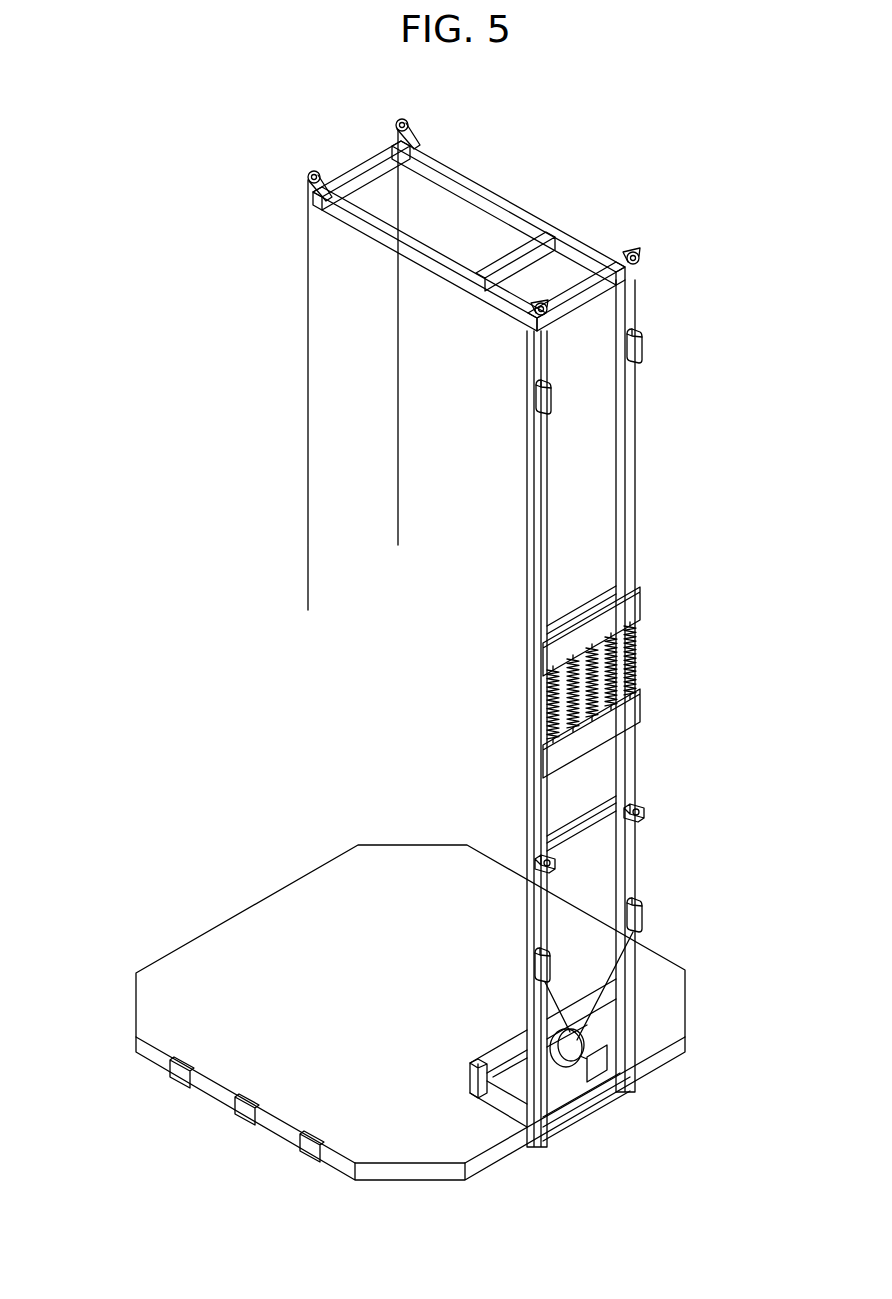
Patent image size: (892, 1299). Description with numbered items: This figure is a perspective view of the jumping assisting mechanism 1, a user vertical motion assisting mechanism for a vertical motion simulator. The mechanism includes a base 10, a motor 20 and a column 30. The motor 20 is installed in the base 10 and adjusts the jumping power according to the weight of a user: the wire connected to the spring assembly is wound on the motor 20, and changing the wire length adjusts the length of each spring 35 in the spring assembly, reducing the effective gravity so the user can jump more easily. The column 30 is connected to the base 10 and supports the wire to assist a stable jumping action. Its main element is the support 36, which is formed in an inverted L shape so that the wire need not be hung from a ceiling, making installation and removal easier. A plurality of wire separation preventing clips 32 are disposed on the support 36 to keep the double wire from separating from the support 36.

The jumping assisting mechanism 1 is at (252, 213).
The base 10 is at (150, 1093).
The motor 20 is at (600, 1027).
The column 30 is at (694, 574).
The wire separation preventing clips 32 is at (550, 402).
The spring 35 is at (615, 675).
The support 36 is at (620, 770).